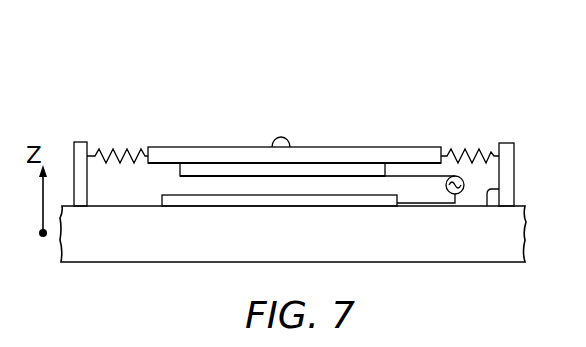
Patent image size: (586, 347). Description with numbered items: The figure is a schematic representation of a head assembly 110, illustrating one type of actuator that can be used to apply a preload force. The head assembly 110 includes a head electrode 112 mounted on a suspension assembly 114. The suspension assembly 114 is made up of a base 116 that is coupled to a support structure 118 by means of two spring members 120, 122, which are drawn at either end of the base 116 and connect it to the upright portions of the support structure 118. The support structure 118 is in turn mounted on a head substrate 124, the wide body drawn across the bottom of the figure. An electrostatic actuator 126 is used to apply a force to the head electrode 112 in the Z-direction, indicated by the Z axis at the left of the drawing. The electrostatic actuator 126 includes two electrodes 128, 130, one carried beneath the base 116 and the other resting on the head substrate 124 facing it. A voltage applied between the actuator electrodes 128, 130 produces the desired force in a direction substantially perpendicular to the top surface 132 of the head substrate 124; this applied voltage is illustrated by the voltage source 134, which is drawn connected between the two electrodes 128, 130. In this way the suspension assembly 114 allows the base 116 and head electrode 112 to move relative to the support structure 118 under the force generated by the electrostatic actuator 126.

The head assembly 110 is at (397, 128).
The head electrode 112 is at (281, 135).
The suspension assembly 114 is at (122, 110).
The base 116 is at (205, 157).
The support structure 118 is at (513, 160).
The spring member 120 is at (118, 150).
The spring member 122 is at (467, 148).
The head substrate 124 is at (442, 250).
The electrostatic actuator 126 is at (160, 184).
The electrode 128 is at (337, 172).
The electrode 130 is at (300, 206).
The top surface 132 is at (514, 189).
The voltage source 134 is at (463, 191).